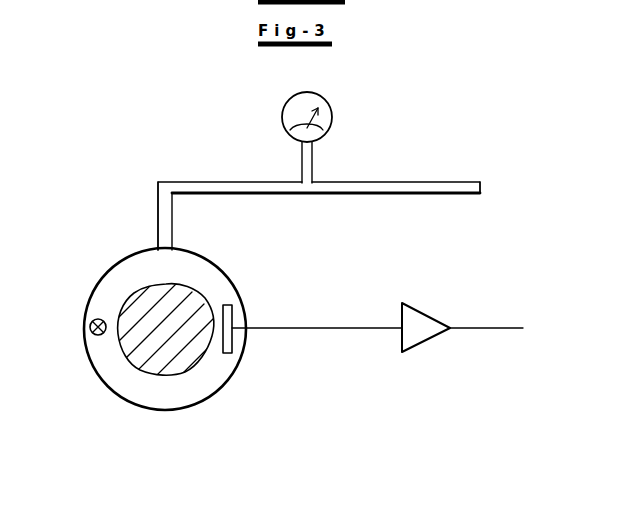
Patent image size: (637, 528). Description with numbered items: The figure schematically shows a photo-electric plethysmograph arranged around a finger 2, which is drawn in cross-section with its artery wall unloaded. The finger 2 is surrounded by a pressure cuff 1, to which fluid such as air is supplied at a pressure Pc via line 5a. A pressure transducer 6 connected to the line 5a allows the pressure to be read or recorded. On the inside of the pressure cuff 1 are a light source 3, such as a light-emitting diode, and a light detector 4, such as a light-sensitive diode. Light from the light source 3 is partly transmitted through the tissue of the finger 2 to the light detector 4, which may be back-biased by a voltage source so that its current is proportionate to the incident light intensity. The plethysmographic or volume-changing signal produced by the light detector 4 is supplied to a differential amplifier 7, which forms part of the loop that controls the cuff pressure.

The pressure cuff 1 is at (223, 278).
The finger 2 is at (178, 363).
The light source 3 is at (88, 320).
The light detector 4 is at (233, 318).
The line 5a is at (216, 184).
The pressure transducer 6 is at (310, 101).
The differential amplifier 7 is at (418, 332).
The pressure Pc is at (480, 185).